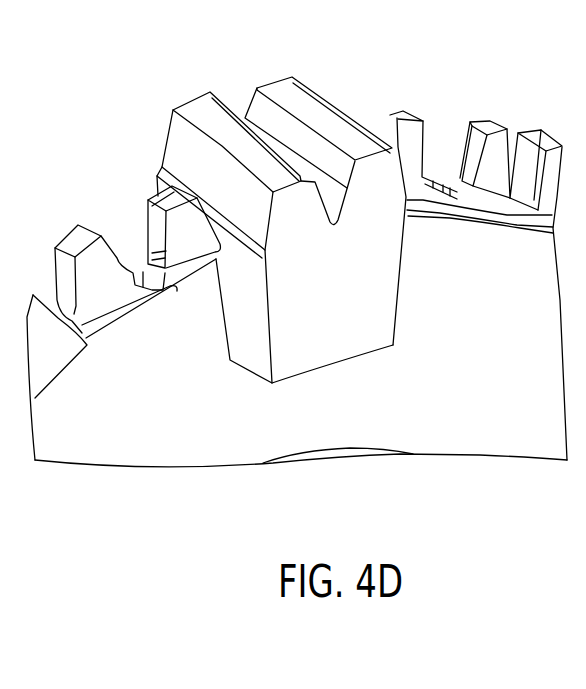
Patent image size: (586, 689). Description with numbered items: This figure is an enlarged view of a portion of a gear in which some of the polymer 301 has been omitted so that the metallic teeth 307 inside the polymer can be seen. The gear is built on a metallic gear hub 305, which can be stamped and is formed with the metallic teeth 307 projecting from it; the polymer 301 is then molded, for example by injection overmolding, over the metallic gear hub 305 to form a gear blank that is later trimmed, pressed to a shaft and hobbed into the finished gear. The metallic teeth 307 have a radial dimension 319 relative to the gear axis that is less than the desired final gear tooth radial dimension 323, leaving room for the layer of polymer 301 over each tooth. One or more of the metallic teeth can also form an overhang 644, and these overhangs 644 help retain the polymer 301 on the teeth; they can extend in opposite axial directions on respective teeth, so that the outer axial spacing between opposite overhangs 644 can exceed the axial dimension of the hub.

The polymer 301 is at (193, 98).
The metallic teeth 307 is at (280, 84).
The overhang 644 is at (154, 303).
The radial dimension 319 is at (187, 205).
The final gear tooth radial dimension 323 is at (290, 185).
The metallic gear hub 305 is at (467, 442).